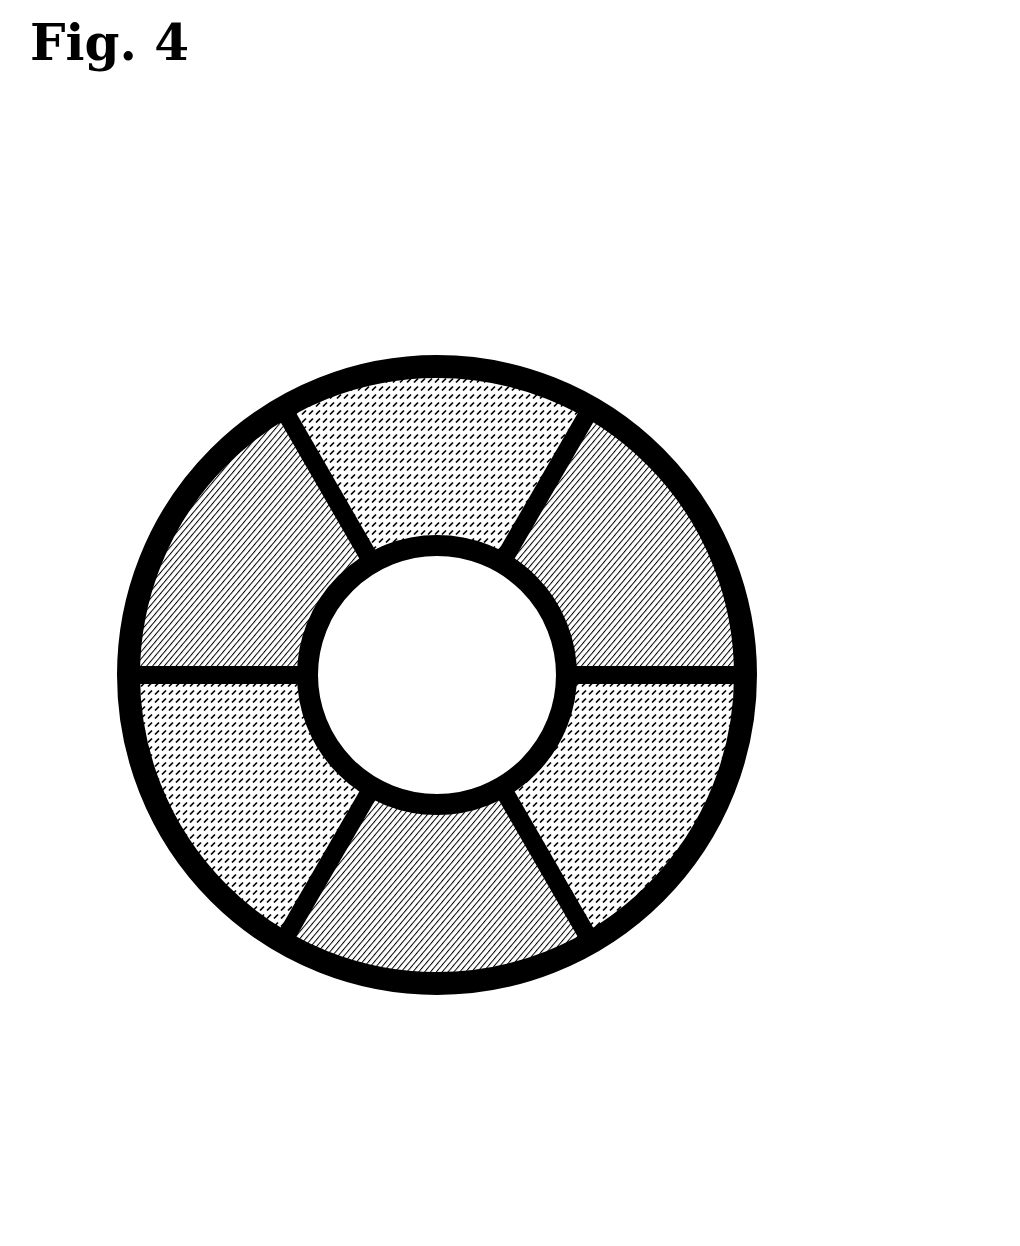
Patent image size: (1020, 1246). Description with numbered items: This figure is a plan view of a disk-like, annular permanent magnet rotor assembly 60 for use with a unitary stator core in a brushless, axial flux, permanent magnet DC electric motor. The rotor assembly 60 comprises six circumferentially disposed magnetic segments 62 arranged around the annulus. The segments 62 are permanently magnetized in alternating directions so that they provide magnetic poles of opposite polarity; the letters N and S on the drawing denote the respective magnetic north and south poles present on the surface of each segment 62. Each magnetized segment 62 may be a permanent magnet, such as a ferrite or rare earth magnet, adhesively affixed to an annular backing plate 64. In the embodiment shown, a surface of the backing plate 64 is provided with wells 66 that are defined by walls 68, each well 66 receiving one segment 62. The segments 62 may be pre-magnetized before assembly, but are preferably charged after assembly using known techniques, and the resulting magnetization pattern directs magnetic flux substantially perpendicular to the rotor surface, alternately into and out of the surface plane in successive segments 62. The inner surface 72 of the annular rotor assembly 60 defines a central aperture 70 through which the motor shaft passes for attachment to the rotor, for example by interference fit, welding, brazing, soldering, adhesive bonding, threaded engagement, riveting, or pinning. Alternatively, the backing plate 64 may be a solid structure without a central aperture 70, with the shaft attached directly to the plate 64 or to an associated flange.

The permanent magnet rotor assembly 60 is at (452, 694).
The magnetic segment 62 is at (390, 930).
The annular backing plate 64 is at (568, 967).
The well 66 is at (200, 788).
The wall 68 is at (220, 663).
The central aperture 70 is at (457, 717).
The inner surface 72 is at (520, 590).
The magnetic north pole N is at (660, 587).
The magnetic south pole S is at (660, 783).